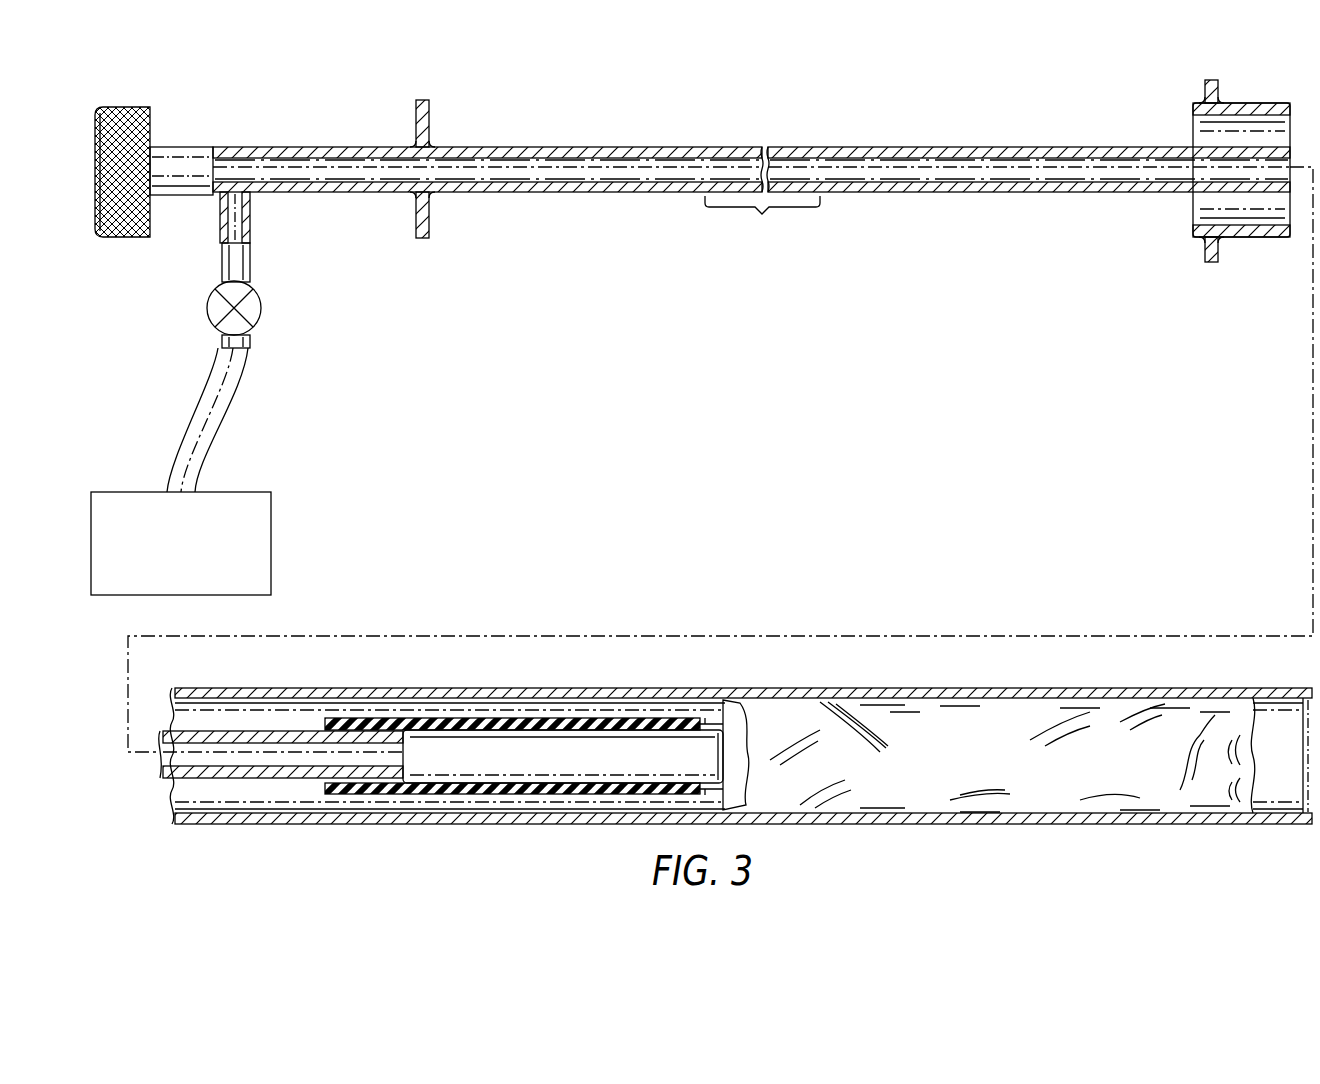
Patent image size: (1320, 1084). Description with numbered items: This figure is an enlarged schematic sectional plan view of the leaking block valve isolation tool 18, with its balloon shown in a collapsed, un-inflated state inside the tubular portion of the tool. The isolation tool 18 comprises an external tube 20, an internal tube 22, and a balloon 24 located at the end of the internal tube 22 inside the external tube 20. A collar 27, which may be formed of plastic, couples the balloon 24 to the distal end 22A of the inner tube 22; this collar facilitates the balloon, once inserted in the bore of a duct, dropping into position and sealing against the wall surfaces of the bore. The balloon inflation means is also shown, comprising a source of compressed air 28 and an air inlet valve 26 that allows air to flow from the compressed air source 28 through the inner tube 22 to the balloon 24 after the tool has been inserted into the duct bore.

The leaking block valve isolation tool 18 is at (452, 368).
The external tube 20 is at (1258, 232).
The internal tube 22 is at (566, 192).
The distal end of inner tube 22A is at (338, 787).
The balloon 24 is at (985, 727).
The air inlet valve 26 is at (263, 306).
The collar 27 is at (566, 720).
The source of compressed air 28 is at (272, 528).